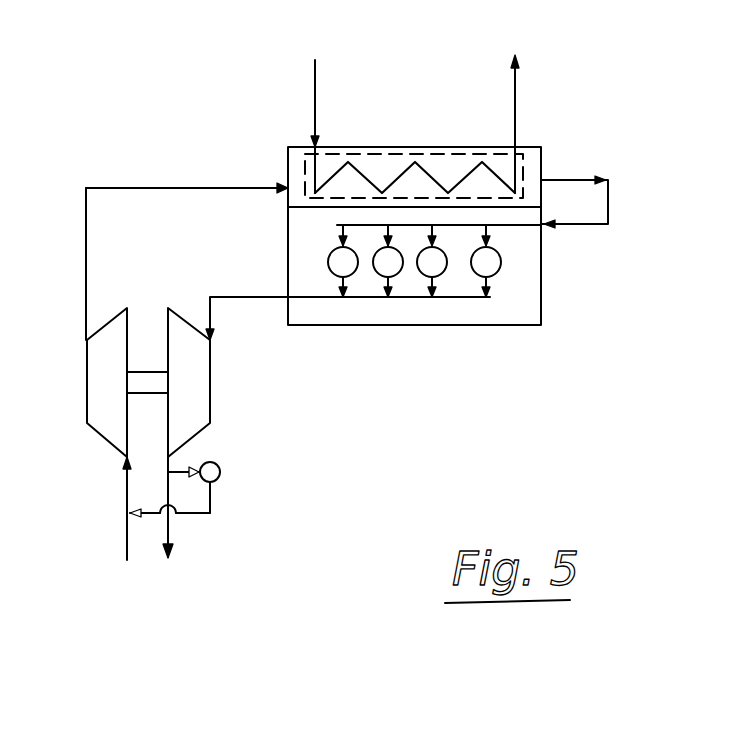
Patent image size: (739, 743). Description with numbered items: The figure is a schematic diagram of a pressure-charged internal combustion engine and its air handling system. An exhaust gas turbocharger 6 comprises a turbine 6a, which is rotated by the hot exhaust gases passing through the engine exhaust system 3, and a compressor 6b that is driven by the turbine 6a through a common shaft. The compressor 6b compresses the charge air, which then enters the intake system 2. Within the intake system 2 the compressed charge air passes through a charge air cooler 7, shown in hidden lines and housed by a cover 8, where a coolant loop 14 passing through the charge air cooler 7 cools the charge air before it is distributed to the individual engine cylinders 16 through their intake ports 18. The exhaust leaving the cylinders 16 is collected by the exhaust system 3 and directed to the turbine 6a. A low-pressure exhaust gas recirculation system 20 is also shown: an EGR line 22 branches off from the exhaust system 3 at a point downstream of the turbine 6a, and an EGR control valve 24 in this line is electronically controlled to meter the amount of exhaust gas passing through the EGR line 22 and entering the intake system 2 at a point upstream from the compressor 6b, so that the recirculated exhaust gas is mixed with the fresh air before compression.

The intake system 2 is at (110, 188).
The exhaust system 3 is at (250, 298).
The exhaust gas turbocharger 6 is at (150, 390).
The turbine 6a is at (192, 392).
The compressor 6b is at (103, 395).
The charge air cooler 7 is at (310, 190).
The cover 8 is at (528, 137).
The coolant loop 14 is at (324, 92).
The engine cylinders 16 is at (506, 270).
The intake ports 18 is at (502, 233).
The low-pressure exhaust gas recirculation system 20 is at (207, 540).
The EGR line 22 is at (213, 503).
The EGR control valve 24 is at (222, 475).